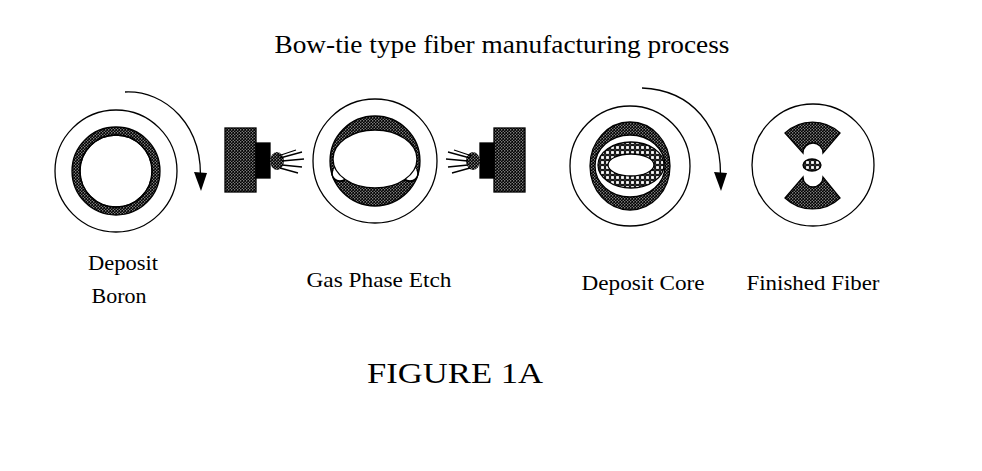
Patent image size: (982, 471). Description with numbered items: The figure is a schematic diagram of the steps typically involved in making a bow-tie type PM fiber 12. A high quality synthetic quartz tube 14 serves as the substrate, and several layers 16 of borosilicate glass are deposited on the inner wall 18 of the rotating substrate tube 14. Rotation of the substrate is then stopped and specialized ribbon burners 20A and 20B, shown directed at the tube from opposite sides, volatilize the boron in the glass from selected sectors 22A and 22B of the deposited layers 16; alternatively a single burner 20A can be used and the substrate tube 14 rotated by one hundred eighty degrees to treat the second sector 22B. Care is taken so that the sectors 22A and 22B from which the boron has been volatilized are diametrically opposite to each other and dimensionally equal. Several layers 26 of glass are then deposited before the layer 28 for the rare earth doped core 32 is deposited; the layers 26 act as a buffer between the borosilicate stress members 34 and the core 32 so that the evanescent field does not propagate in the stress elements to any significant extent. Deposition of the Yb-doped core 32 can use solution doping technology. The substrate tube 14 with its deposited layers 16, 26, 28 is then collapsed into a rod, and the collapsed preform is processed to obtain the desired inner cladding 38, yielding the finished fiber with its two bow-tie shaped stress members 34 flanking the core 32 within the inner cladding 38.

The bow-tie type PM fiber 12 is at (803, 44).
The synthetic quartz tube 14 is at (67, 148).
The layers of borosilicate glass 16 is at (78, 192).
The inner wall 18 is at (105, 130).
The ribbon burner 20A is at (237, 126).
The ribbon burner 20B is at (517, 126).
The sector 22A is at (343, 187).
The sector 22B is at (405, 187).
The layers of glass 26 is at (627, 140).
The core layer 28 is at (653, 185).
The rare earth doped core 32 is at (821, 163).
The borosilicate stress members 34 is at (803, 127).
The inner cladding 38 is at (847, 188).